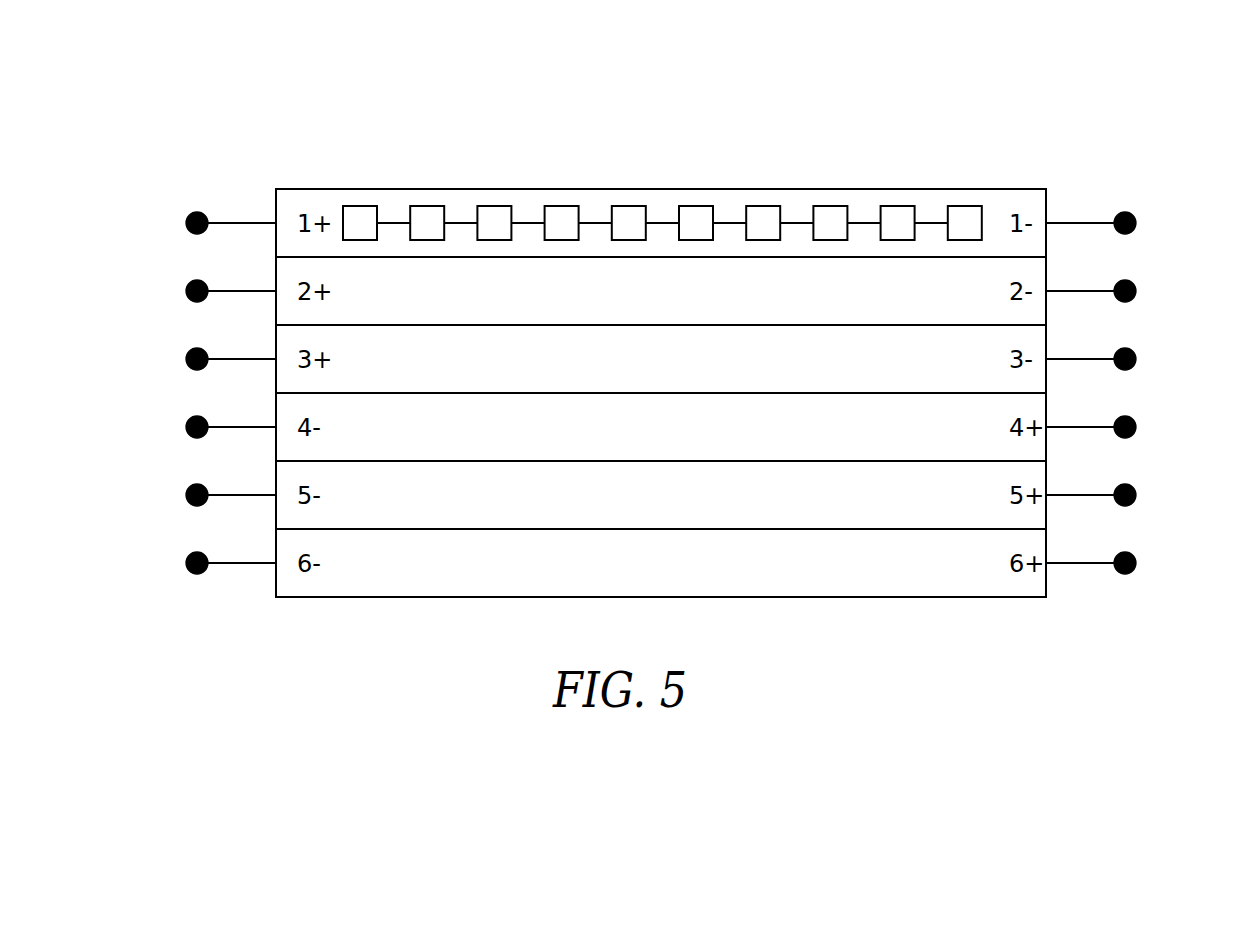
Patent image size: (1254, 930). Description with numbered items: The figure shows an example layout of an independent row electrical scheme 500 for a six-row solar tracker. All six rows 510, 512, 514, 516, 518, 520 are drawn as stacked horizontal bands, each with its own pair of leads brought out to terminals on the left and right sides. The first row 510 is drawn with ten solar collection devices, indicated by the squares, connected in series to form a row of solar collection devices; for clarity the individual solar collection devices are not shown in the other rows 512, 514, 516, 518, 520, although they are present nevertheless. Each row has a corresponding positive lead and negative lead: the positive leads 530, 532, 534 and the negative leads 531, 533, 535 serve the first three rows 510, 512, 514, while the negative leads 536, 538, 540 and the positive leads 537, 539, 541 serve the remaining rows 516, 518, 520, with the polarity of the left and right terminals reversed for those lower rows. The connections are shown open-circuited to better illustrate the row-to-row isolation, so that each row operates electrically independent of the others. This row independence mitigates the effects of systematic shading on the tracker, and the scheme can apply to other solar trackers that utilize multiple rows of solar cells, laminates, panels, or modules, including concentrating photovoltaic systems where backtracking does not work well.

The connector assembly 500 is at (675, 80).
The first row 510 is at (652, 197).
The second row 512 is at (618, 303).
The third row 514 is at (618, 371).
The fourth row 516 is at (618, 439).
The fifth row 518 is at (618, 507).
The sixth row 520 is at (618, 575).
The positive lead 530 is at (192, 212).
The positive lead 532 is at (192, 280).
The positive lead 534 is at (192, 348).
The negative lead 536 is at (192, 416).
The negative lead 538 is at (192, 484).
The negative lead 540 is at (192, 552).
The negative lead 531 is at (1130, 211).
The negative lead 533 is at (1130, 279).
The negative lead 535 is at (1130, 347).
The positive lead 537 is at (1130, 415).
The positive lead 539 is at (1130, 483).
The positive lead 541 is at (1130, 551).